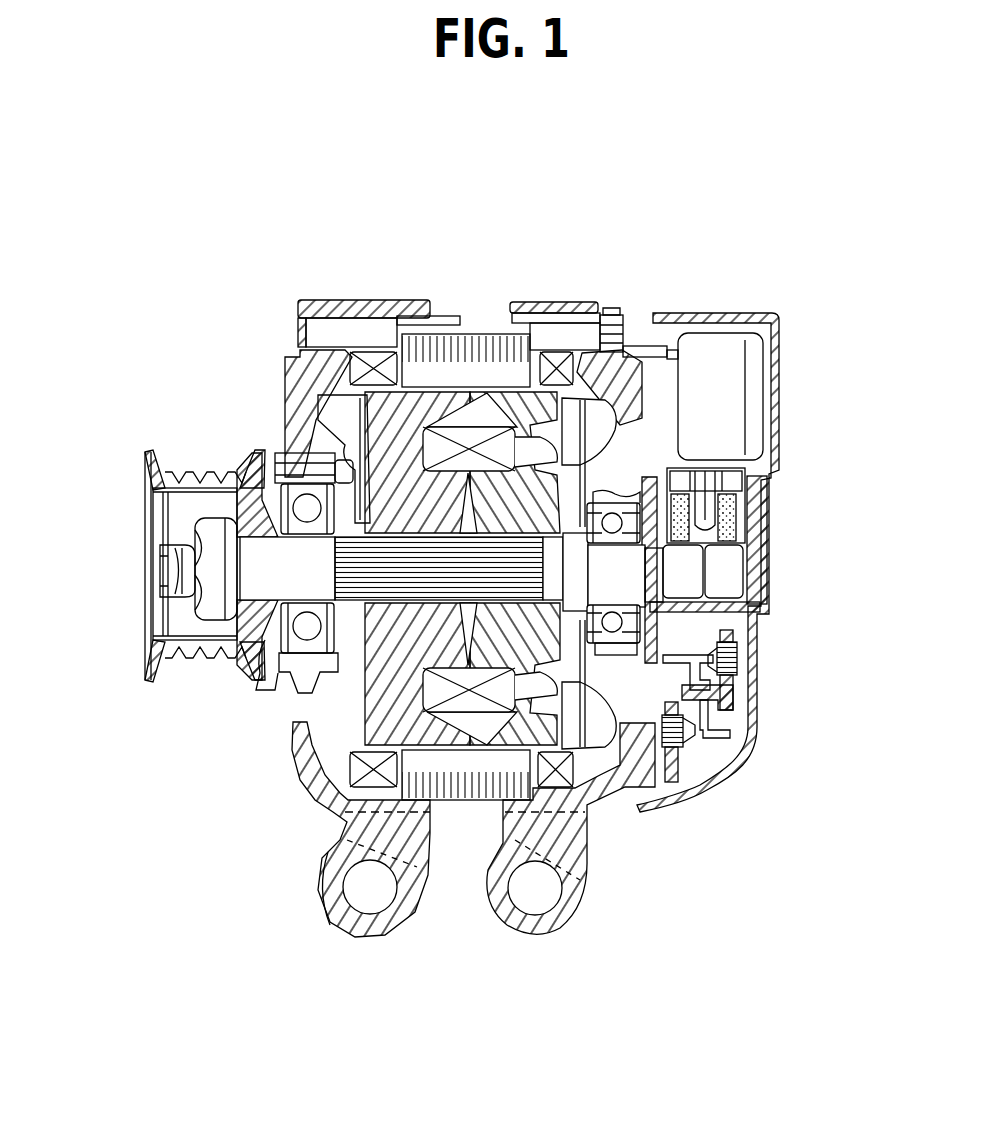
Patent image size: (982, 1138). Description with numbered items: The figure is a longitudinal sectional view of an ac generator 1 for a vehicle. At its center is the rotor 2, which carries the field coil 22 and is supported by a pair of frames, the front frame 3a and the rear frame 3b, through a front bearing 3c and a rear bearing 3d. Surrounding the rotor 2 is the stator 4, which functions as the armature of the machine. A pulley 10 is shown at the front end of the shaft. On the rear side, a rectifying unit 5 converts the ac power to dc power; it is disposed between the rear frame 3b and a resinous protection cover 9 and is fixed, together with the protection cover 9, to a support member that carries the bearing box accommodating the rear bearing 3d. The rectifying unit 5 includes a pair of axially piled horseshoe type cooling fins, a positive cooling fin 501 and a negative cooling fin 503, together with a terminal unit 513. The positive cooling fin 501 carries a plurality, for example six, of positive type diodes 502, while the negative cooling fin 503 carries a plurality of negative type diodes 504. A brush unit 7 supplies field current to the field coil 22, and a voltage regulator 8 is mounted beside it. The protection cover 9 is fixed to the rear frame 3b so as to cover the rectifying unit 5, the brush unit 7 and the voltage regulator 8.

The ac generator 1 is at (660, 190).
The rotor 2 is at (447, 386).
The field coil 22 is at (471, 438).
The front frame 3a is at (362, 925).
The rear frame 3b is at (537, 932).
The front bearing 3c is at (305, 490).
The rear bearing 3d is at (622, 605).
The stator 4 is at (518, 333).
The rectifying unit 5 is at (699, 755).
The positive cooling fin 501 is at (733, 697).
The positive type diodes 502 is at (738, 658).
The negative cooling fin 503 is at (663, 790).
The negative type diodes 504 is at (695, 740).
The terminal unit 513 is at (733, 710).
The brush unit 7 is at (740, 485).
The voltage regulator 8 is at (706, 348).
The protection cover 9 is at (730, 778).
The pulley 10 is at (147, 653).